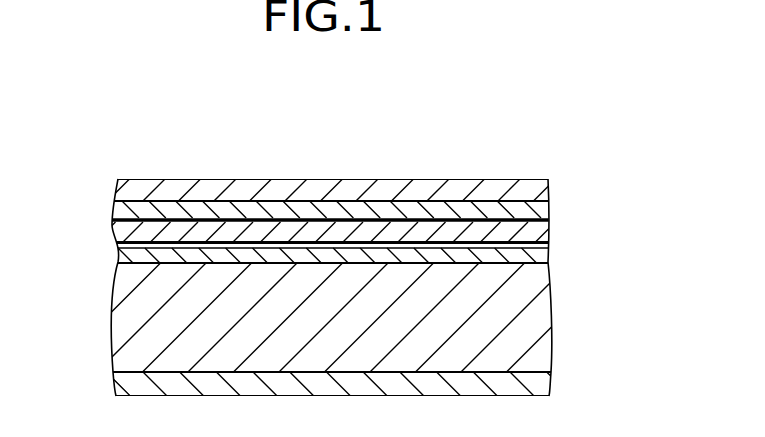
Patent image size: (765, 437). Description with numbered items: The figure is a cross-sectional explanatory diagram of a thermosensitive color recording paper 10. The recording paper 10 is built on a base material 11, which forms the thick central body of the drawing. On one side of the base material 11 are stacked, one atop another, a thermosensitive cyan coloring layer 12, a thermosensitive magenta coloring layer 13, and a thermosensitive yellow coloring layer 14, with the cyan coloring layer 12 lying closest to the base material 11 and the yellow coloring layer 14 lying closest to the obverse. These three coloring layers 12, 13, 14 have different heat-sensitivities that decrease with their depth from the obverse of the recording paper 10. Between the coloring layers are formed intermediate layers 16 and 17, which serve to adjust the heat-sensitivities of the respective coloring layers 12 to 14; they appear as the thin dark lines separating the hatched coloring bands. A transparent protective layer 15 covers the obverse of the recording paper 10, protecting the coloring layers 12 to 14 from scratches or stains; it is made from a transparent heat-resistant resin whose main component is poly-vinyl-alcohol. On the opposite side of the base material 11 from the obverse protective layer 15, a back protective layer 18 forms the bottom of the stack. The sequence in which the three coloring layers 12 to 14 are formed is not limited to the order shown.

The thermosensitive recording paper 10 is at (370, 172).
The base material 11 is at (537, 325).
The thermosensitive cyan coloring layer 12 is at (540, 255).
The thermosensitive magenta coloring layer 13 is at (542, 228).
The thermosensitive yellow coloring layer 14 is at (540, 208).
The transparent protective layer 15 is at (119, 188).
The intermediate layer 16 is at (136, 243).
The intermediate layer 17 is at (118, 221).
The back protective layer 18 is at (537, 388).